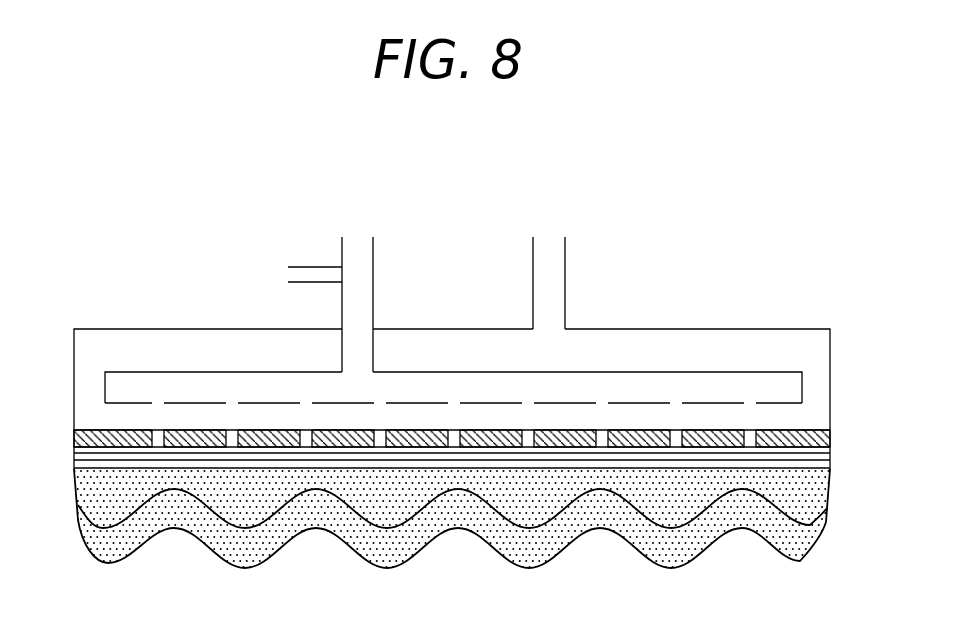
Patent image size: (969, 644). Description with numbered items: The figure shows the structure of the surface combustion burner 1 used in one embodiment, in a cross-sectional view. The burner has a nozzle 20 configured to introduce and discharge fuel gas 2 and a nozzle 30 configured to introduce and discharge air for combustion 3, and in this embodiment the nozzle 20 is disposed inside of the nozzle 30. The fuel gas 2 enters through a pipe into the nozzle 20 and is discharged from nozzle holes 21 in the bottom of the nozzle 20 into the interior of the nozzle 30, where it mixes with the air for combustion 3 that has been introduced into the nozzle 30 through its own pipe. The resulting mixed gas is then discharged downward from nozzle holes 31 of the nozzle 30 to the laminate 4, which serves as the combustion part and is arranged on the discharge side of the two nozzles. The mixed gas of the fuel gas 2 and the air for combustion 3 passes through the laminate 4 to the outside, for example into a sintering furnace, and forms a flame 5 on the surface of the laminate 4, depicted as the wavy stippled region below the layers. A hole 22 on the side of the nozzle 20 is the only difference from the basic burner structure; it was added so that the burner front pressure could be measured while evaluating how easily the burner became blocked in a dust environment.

The surface combustion burner 1 is at (670, 309).
The fuel gas 2 is at (357, 222).
The air for combustion 3 is at (550, 222).
The laminate 4 is at (836, 447).
The flame 5 is at (545, 553).
The nozzle 20 is at (178, 372).
The nozzle holes 21 is at (232, 403).
The hole 22 is at (308, 267).
The nozzle 30 is at (831, 351).
The nozzle holes 31 is at (158, 430).